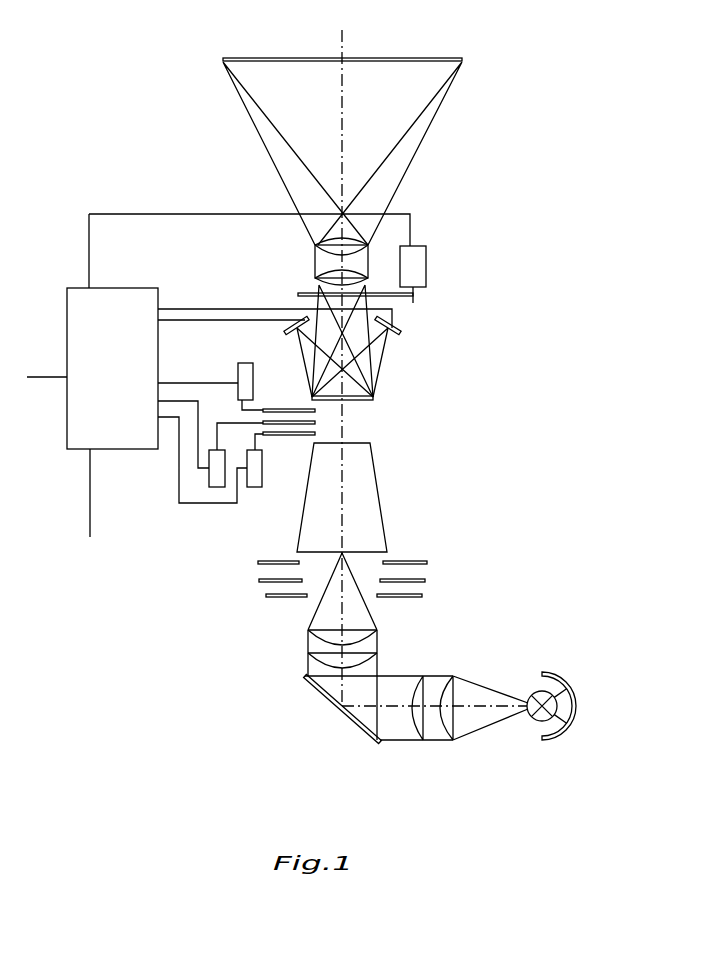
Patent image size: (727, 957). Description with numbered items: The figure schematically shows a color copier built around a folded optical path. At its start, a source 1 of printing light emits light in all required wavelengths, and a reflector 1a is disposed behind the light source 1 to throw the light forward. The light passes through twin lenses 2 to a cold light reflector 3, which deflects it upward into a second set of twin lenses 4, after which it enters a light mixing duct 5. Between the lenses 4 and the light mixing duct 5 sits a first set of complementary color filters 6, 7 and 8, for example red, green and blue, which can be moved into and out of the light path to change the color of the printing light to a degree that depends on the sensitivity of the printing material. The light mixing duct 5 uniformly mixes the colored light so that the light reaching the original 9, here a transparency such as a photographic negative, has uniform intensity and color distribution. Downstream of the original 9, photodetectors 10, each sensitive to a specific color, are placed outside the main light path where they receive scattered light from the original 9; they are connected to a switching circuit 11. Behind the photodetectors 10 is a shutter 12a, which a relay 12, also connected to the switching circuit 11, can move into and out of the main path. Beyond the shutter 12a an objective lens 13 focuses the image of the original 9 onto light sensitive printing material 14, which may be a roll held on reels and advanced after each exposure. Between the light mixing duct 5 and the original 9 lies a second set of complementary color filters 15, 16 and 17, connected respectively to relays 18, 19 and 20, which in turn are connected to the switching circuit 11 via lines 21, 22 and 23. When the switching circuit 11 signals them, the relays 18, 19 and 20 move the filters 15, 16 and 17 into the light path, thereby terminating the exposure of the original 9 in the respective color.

The source of printing light 1 is at (532, 721).
The reflector 1a is at (578, 702).
The twin lenses 2 is at (423, 740).
The cold light reflector 3 is at (348, 722).
The second set of twin lenses 4 is at (308, 634).
The light mixing duct 5 is at (370, 466).
The complementary color filter 6 is at (427, 562).
The complementary color filter 7 is at (425, 581).
The complementary color filter 8 is at (422, 596).
The original 9 is at (373, 399).
The photodetectors 10 is at (285, 334).
The switching circuit 11 is at (118, 452).
The relay 12 is at (418, 258).
The shutter 12a is at (427, 294).
The objective lens 13 is at (362, 200).
The light sensitive printing material 14 is at (406, 60).
The complementary color filter 15 is at (285, 437).
The complementary color filter 16 is at (315, 423).
The complementary color filter 17 is at (297, 410).
The relay 18 is at (253, 488).
The relay 19 is at (215, 488).
The relay 20 is at (238, 371).
The line 21 is at (183, 503).
The line 22 is at (198, 430).
The line 23 is at (183, 383).